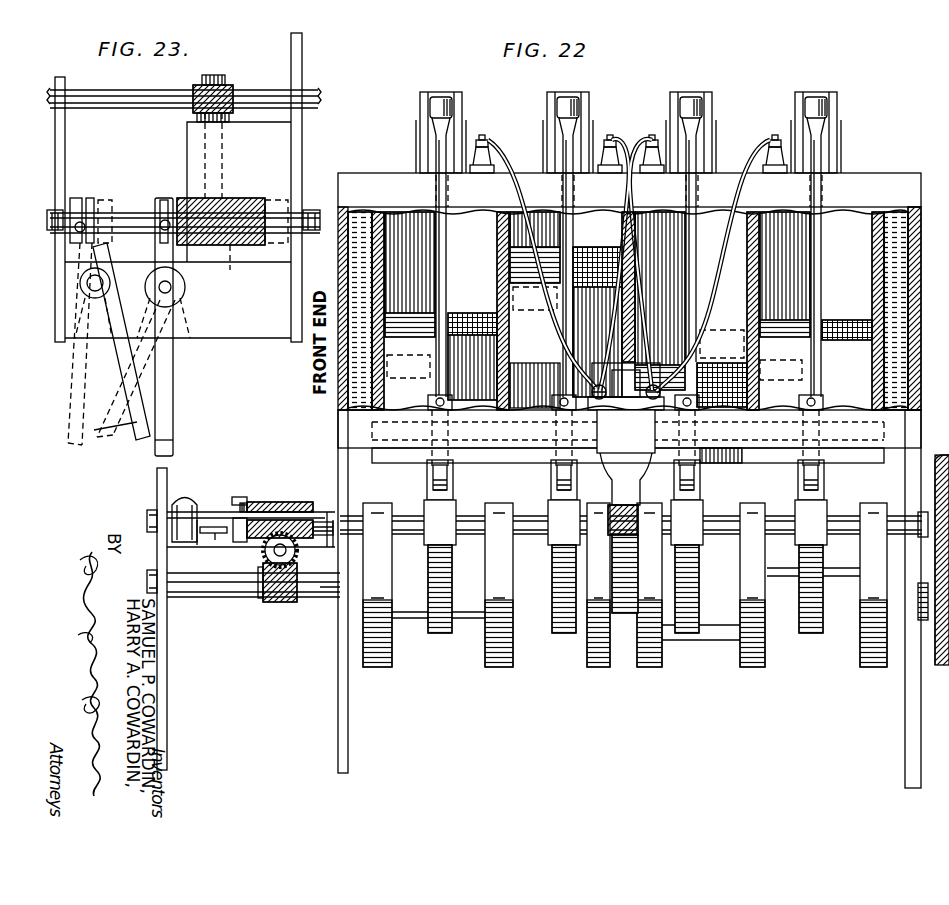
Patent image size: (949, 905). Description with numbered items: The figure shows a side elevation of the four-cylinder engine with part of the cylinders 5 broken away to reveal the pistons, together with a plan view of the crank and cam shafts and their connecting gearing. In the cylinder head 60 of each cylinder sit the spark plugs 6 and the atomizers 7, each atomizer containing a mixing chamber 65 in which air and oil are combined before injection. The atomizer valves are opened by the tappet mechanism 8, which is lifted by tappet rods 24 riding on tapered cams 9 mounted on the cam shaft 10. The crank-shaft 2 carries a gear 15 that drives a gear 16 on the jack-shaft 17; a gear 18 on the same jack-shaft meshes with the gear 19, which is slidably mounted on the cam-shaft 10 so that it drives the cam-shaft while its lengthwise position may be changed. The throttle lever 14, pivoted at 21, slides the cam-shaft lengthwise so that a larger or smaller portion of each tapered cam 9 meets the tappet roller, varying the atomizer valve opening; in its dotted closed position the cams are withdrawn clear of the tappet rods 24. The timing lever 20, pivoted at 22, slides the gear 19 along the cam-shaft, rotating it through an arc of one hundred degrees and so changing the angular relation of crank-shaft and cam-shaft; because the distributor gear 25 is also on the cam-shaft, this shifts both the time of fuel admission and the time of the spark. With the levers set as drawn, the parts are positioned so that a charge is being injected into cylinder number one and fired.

In FIG. 23, the crank-shaft 2 is at (263, 80).
In FIG. 22, the cylinders 5 is at (380, 218).
In FIG. 22, the spark plugs 6 is at (482, 138).
In FIG. 22, the atomizers 7 is at (545, 105).
In FIG. 22, the tappet mechanism 8 is at (455, 105).
In FIG. 22, the cams 9 is at (545, 507).
In FIG. 23, the cam shaft 10 is at (275, 205).
In FIG. 23, the throttle lever 14 is at (140, 446).
In FIG. 23, the gear 15 is at (193, 90).
In FIG. 23, the gear 16 is at (192, 114).
In FIG. 23, the jack-shaft 17 is at (205, 148).
In FIG. 23, the gear 18 is at (235, 262).
In FIG. 23, the gear 19 is at (246, 182).
In FIG. 23, the timing lever 20 is at (148, 358).
In FIG. 23, the pivot 21 is at (103, 283).
In FIG. 23, the pivot 22 is at (171, 287).
In FIG. 22, the tappet rod 24 is at (444, 77).
In FIG. 22, the distributor gear 25 is at (621, 512).
In FIG. 22, the cylinder head 60 is at (353, 173).
In FIG. 22, the mixing chamber 65 is at (473, 223).